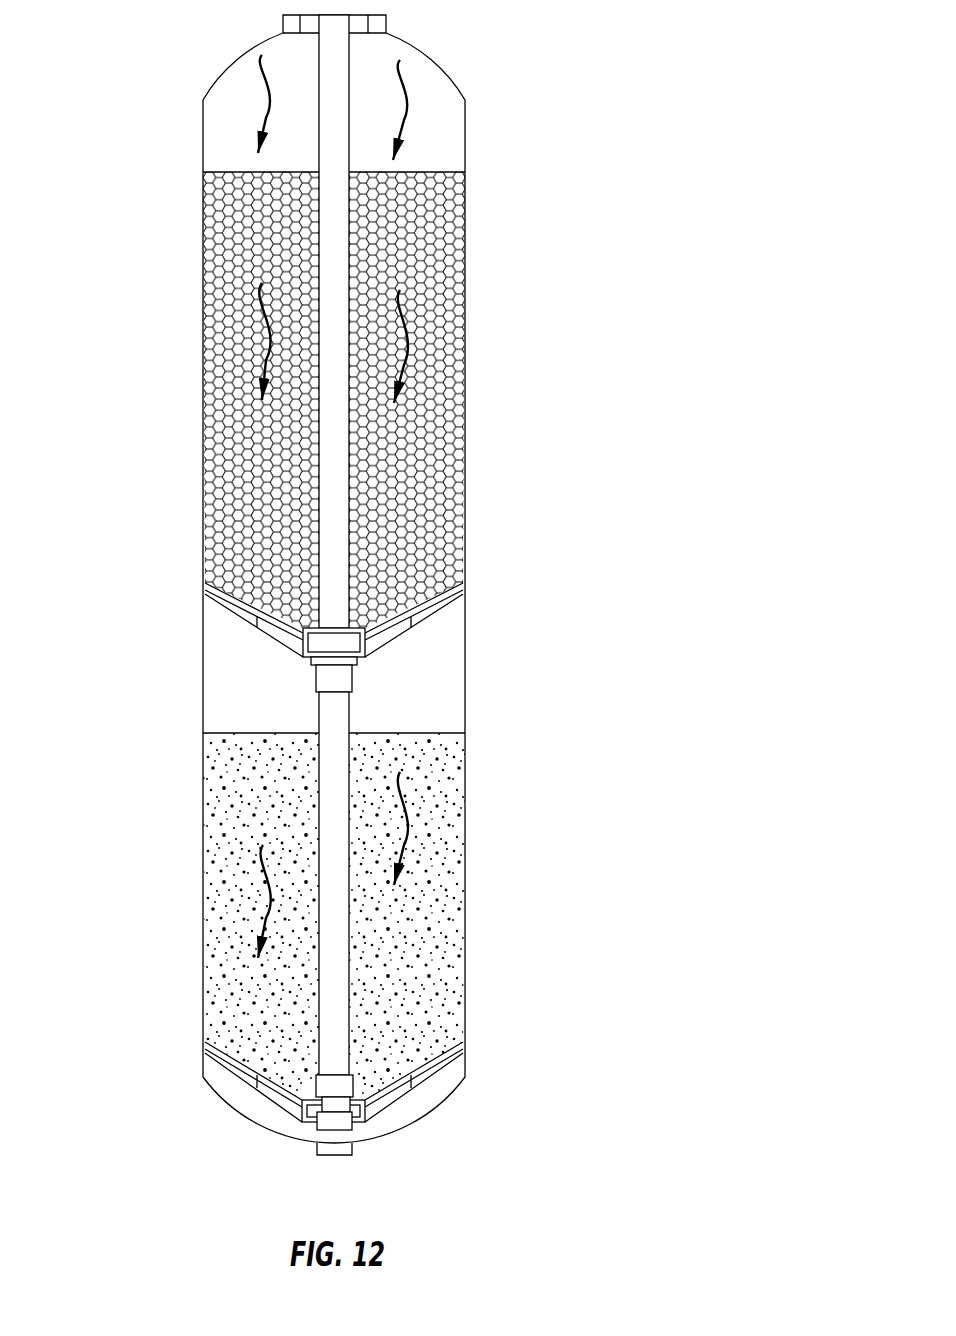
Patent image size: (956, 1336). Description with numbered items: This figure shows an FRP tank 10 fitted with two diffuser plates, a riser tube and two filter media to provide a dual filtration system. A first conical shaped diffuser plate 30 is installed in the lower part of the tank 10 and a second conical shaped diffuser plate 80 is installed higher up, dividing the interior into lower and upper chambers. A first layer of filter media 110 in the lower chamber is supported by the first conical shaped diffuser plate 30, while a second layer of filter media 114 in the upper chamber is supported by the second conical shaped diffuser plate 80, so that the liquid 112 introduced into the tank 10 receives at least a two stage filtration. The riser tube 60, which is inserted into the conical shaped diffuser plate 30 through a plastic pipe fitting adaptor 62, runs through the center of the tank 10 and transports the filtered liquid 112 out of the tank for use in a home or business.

The tank 10 is at (202, 857).
The first conical shaped diffuser plate 30 is at (268, 1098).
The riser tube 60 is at (325, 722).
The plastic pipe fitting adaptor 62 is at (336, 468).
The second conical shaped diffuser plate 80 is at (425, 617).
The first layer of filter media 110 is at (435, 923).
The liquid 112 is at (416, 132).
The second layer of filter media 114 is at (427, 447).